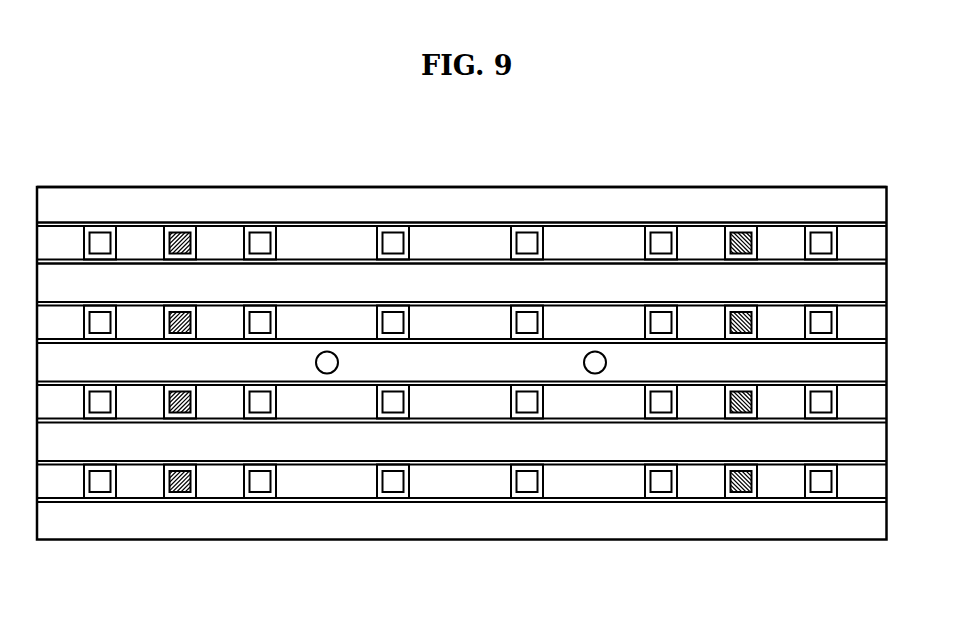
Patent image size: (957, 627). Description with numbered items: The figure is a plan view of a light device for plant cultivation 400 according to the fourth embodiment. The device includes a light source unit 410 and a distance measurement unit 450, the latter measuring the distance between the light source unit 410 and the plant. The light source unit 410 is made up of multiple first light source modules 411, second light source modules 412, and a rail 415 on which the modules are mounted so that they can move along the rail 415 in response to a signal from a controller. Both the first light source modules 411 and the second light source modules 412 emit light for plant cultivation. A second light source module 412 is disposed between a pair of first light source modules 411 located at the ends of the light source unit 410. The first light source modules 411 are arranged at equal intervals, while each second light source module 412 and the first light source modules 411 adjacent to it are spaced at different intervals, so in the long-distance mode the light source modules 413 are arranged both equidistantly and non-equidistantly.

The light device for plant cultivation 400 is at (113, 130).
The light source unit 410 is at (592, 206).
The first light source module 411 is at (662, 237).
The second light source module 412 is at (737, 232).
The light source modules 413 is at (748, 146).
The rail 415 is at (795, 224).
The distance measurement unit 450 is at (594, 374).